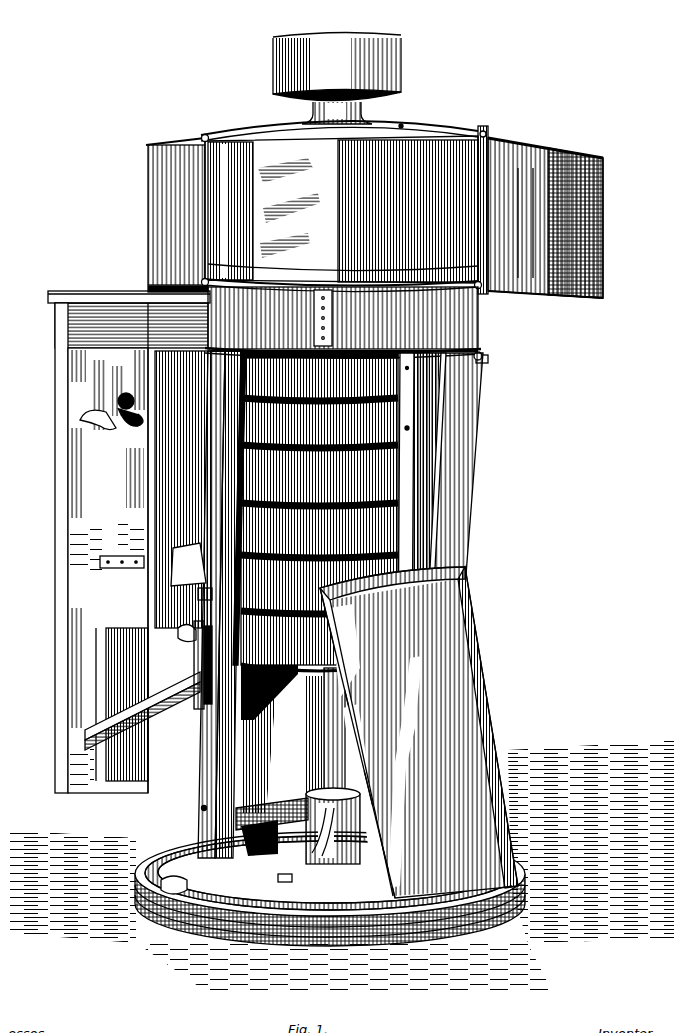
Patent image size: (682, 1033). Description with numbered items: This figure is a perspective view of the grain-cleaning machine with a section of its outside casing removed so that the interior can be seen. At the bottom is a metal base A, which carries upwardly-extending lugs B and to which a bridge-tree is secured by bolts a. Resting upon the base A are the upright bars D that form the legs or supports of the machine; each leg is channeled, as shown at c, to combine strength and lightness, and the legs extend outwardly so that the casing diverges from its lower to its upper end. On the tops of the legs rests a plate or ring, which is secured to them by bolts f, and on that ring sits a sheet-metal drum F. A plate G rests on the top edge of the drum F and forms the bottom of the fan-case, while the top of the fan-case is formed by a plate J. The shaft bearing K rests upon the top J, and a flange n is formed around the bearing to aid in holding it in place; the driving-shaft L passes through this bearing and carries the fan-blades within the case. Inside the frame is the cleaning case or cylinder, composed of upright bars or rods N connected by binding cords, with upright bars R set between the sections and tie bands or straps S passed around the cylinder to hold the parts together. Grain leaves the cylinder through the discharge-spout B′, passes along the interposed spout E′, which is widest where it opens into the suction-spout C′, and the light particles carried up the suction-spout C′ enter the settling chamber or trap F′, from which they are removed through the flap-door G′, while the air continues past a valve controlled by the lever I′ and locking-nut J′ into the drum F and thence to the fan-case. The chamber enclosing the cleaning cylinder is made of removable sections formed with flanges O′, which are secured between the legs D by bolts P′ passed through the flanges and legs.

The metal base A is at (330, 889).
The bolts a is at (272, 848).
The lugs B is at (165, 845).
The discharge-spout B′ is at (186, 642).
The suction-spout C′ is at (52, 638).
The channel c is at (193, 800).
The upright bars D is at (193, 762).
The interposed spout E′ is at (185, 703).
The drum F is at (323, 322).
The settling chamber or trap F′ is at (188, 564).
The bolts f is at (395, 497).
The shelf f′ is at (319, 443).
The plate G is at (341, 209).
The flap-door G′ is at (168, 624).
The lever I′ is at (114, 385).
The top plate J is at (428, 120).
The locking-nut J′ is at (98, 434).
The bearing K is at (175, 211).
The driving-shaft L is at (337, 113).
The upright bars or rods N is at (360, 640).
The flange n is at (393, 116).
The flanges O′ is at (480, 353).
The bolts P′ is at (410, 425).
The upright bars R is at (440, 495).
The tie bands or straps S is at (300, 664).
The bracket S′ is at (190, 583).